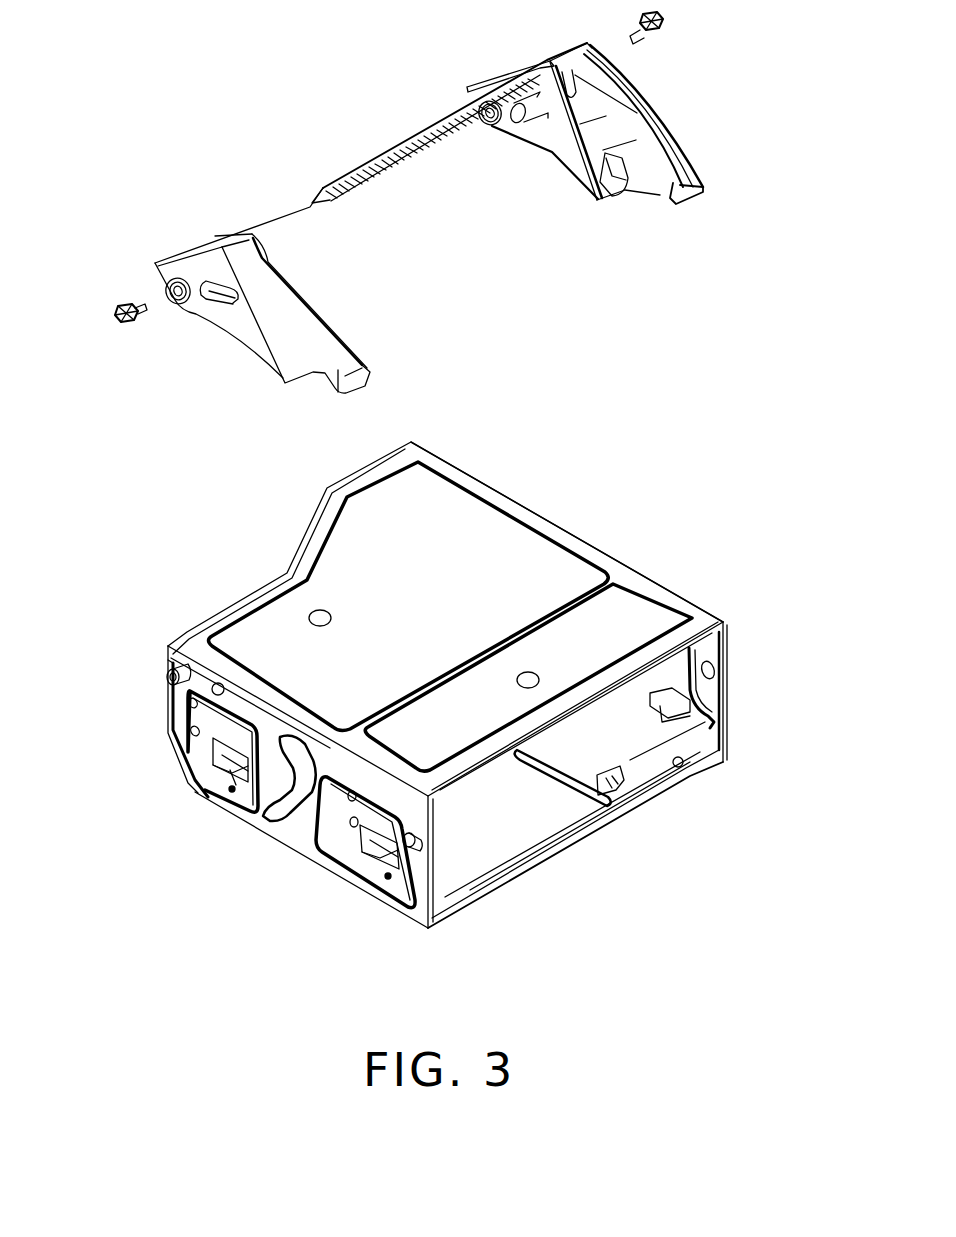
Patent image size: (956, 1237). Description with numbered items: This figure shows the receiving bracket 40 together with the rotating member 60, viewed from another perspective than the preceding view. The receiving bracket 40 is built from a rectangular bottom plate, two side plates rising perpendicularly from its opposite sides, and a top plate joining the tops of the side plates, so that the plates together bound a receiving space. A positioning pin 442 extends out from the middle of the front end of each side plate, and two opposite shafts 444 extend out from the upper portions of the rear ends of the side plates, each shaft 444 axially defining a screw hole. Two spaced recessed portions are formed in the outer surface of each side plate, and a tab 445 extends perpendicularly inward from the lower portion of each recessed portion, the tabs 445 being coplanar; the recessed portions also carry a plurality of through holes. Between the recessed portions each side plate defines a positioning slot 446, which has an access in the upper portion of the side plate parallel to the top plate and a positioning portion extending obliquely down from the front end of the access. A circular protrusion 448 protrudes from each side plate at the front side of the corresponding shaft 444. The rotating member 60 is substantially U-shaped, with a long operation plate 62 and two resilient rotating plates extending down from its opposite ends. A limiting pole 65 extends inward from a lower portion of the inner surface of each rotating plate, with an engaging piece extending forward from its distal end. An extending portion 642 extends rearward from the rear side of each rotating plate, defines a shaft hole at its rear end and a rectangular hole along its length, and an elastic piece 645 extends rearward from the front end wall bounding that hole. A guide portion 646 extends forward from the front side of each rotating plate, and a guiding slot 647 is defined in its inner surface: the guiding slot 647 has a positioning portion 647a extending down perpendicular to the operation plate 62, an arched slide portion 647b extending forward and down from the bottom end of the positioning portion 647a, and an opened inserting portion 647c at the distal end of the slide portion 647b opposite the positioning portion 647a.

The receiving bracket 40 is at (232, 557).
The positioning pin 442 is at (425, 846).
The shaft 444 is at (176, 645).
The tab 445 is at (213, 759).
The positioning slot 446 is at (297, 805).
The circular protrusion 448 is at (218, 682).
The rotating member 60 is at (286, 152).
The operation plate 62 is at (396, 136).
The extending portion 642 is at (155, 268).
The elastic piece 645 is at (205, 296).
The guide portion 646 is at (307, 330).
The guiding slot 647 is at (727, 14).
The positioning portion 647a is at (584, 86).
The slide portion 647b is at (607, 112).
The inserting portion 647c is at (668, 197).
The limiting pole 65 is at (593, 200).